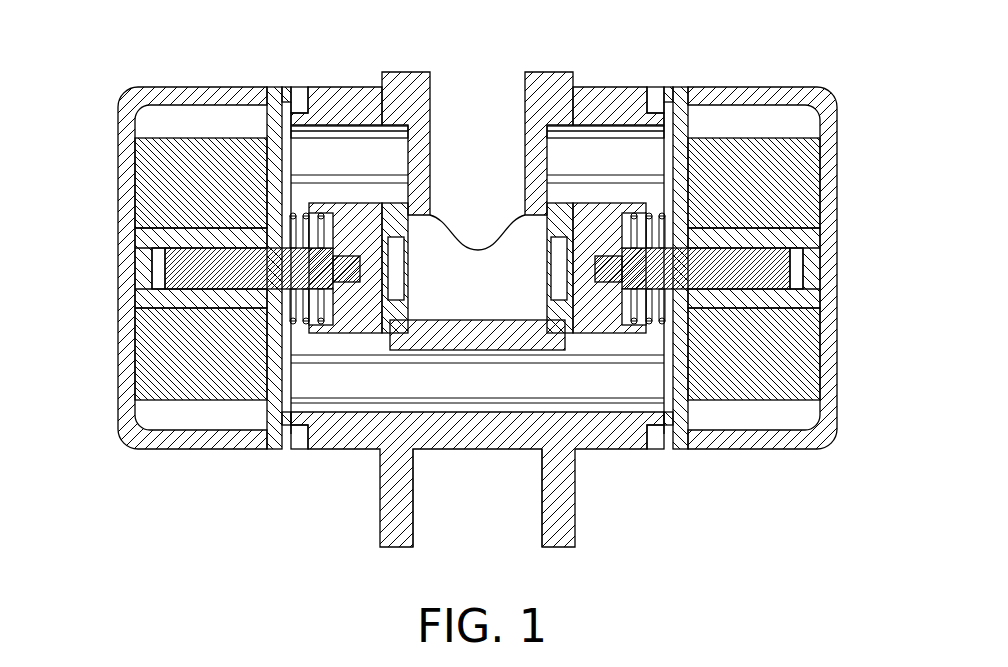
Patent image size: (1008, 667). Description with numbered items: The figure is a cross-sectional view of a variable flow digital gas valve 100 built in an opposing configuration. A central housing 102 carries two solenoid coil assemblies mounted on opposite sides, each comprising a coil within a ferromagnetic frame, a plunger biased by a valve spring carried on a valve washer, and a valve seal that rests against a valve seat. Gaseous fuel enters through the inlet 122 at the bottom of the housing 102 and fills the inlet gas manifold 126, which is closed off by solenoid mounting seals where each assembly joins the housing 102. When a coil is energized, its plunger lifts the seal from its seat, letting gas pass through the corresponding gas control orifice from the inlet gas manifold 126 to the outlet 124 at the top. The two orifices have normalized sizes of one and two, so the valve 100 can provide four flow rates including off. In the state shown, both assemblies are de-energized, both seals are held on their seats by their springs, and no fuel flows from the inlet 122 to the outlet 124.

The variable flow digital gas valve 100 is at (728, 492).
The housing 102 is at (350, 445).
The inlet 122 is at (518, 538).
The outlet 124 is at (467, 92).
The inlet gas manifold 126 is at (438, 388).